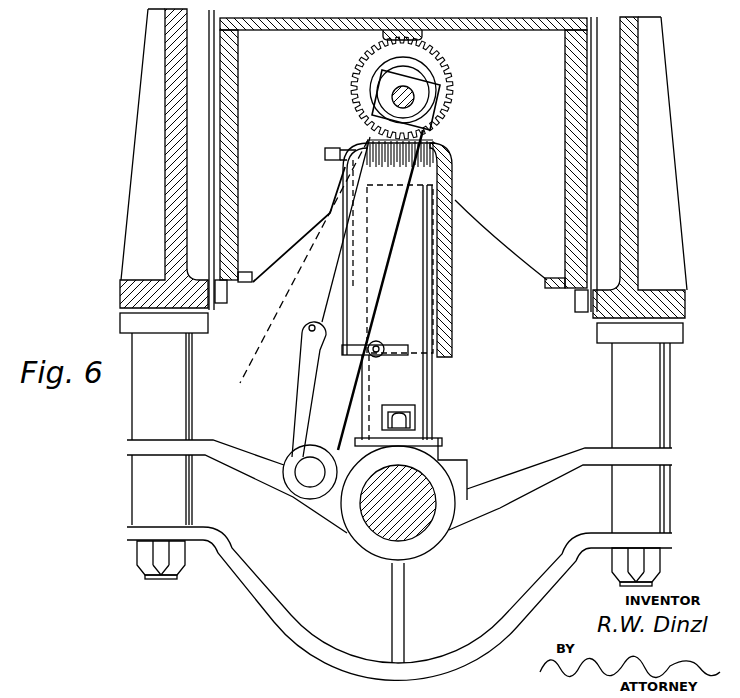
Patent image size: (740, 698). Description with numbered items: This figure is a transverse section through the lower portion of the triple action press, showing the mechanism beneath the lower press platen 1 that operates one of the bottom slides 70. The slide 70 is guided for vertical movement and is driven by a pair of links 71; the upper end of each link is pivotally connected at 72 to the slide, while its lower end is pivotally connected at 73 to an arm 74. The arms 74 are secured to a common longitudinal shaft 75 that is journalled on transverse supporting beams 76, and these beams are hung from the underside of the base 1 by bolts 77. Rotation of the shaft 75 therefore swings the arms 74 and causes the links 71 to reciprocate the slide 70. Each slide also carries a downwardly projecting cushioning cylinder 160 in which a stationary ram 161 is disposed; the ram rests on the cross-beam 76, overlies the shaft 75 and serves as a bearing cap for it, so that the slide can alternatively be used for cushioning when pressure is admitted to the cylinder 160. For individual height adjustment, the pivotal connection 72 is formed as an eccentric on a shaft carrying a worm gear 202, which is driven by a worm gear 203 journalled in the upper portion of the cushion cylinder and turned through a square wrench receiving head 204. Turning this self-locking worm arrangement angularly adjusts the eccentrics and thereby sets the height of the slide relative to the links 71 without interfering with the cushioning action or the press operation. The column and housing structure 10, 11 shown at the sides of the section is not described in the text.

The lower press platen 1 is at (668, 171).
The columns 10 is at (652, 4).
The housing 11 is at (545, 4).
The bottom slide 70 is at (497, 19).
The link 71 is at (249, 360).
The pivotal connection 72 is at (415, 103).
The pivot 73 is at (300, 468).
The arm 74 is at (327, 507).
The longitudinal shaft 75 is at (428, 494).
The transverse supporting beam 76 is at (265, 577).
The bolt 77 is at (145, 553).
The cushioning cylinder 160 is at (452, 261).
The stationary ram 161 is at (425, 384).
The worm gear 202 is at (445, 78).
The worm gear 203 is at (368, 143).
The square wrench receiving head 204 is at (323, 153).